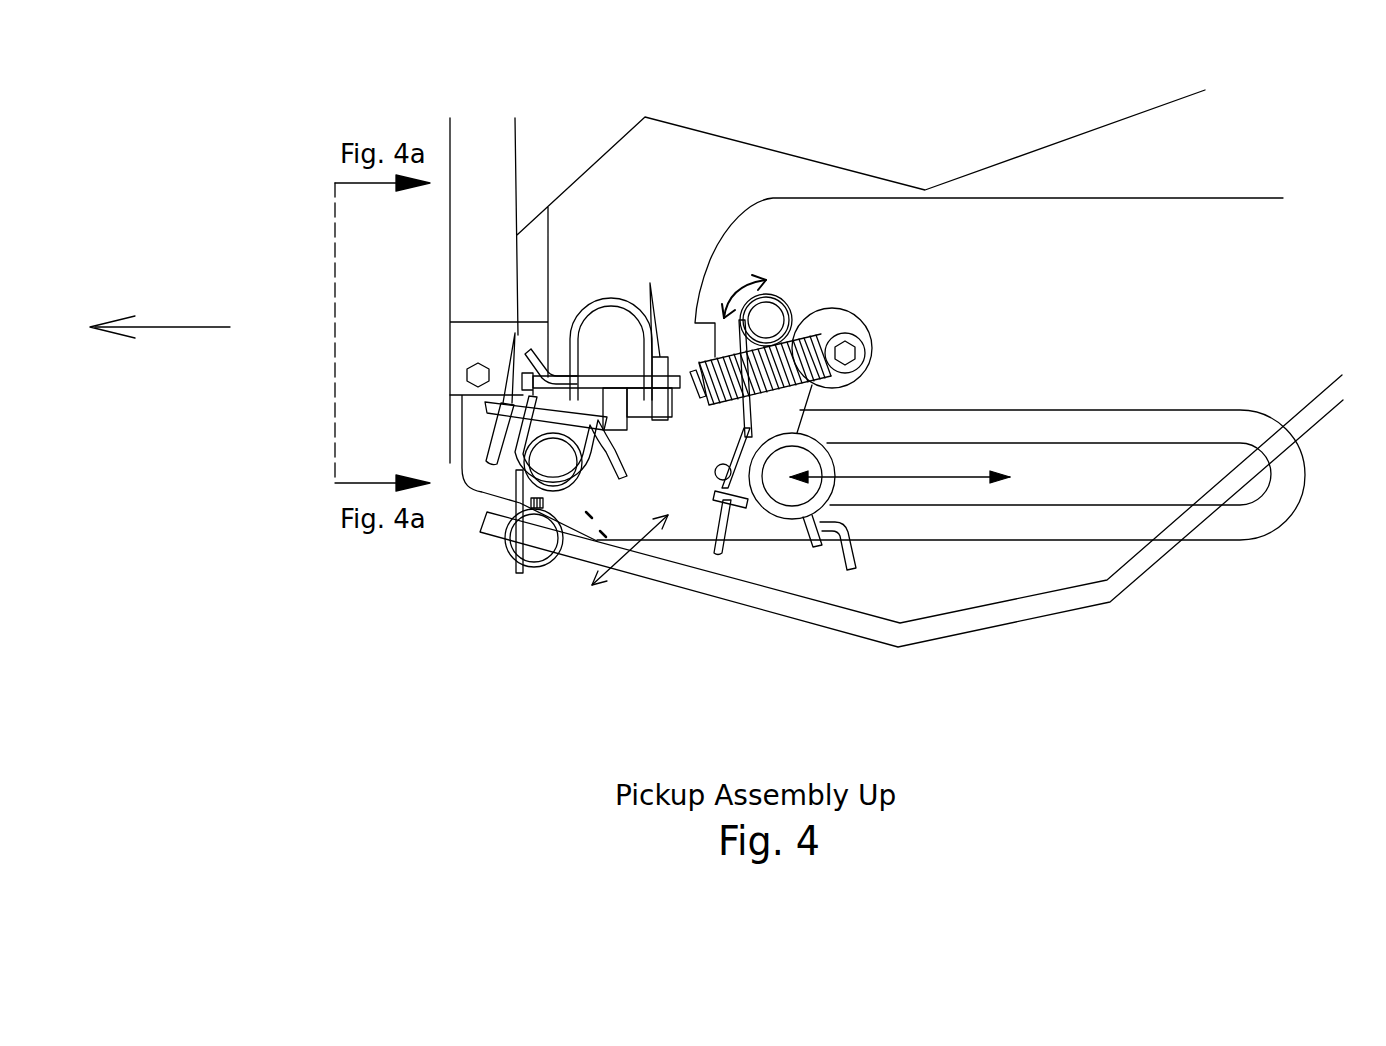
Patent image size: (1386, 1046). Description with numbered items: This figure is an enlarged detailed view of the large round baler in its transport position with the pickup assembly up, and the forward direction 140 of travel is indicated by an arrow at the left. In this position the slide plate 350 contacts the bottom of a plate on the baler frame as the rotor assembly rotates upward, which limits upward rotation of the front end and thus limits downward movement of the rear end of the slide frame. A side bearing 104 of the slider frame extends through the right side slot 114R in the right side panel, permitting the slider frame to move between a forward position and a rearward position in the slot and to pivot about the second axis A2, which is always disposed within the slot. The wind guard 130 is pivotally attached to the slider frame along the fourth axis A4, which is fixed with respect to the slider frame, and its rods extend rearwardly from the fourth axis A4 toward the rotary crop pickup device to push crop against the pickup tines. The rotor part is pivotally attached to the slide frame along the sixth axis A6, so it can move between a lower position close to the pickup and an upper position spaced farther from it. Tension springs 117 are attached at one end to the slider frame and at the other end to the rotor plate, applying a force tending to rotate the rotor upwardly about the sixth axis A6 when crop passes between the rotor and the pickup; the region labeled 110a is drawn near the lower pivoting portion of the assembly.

The forward direction 140 is at (185, 325).
The slide plate 350 is at (480, 340).
The fourth axis A4 is at (568, 482).
The sixth axis A6 is at (767, 318).
The tension springs 117 is at (818, 305).
The second axis A2 is at (792, 474).
The side bearing 104 is at (827, 462).
The right side slot 114R is at (1063, 468).
The pickup arm 110a is at (657, 642).
The wind guard 130 is at (768, 605).